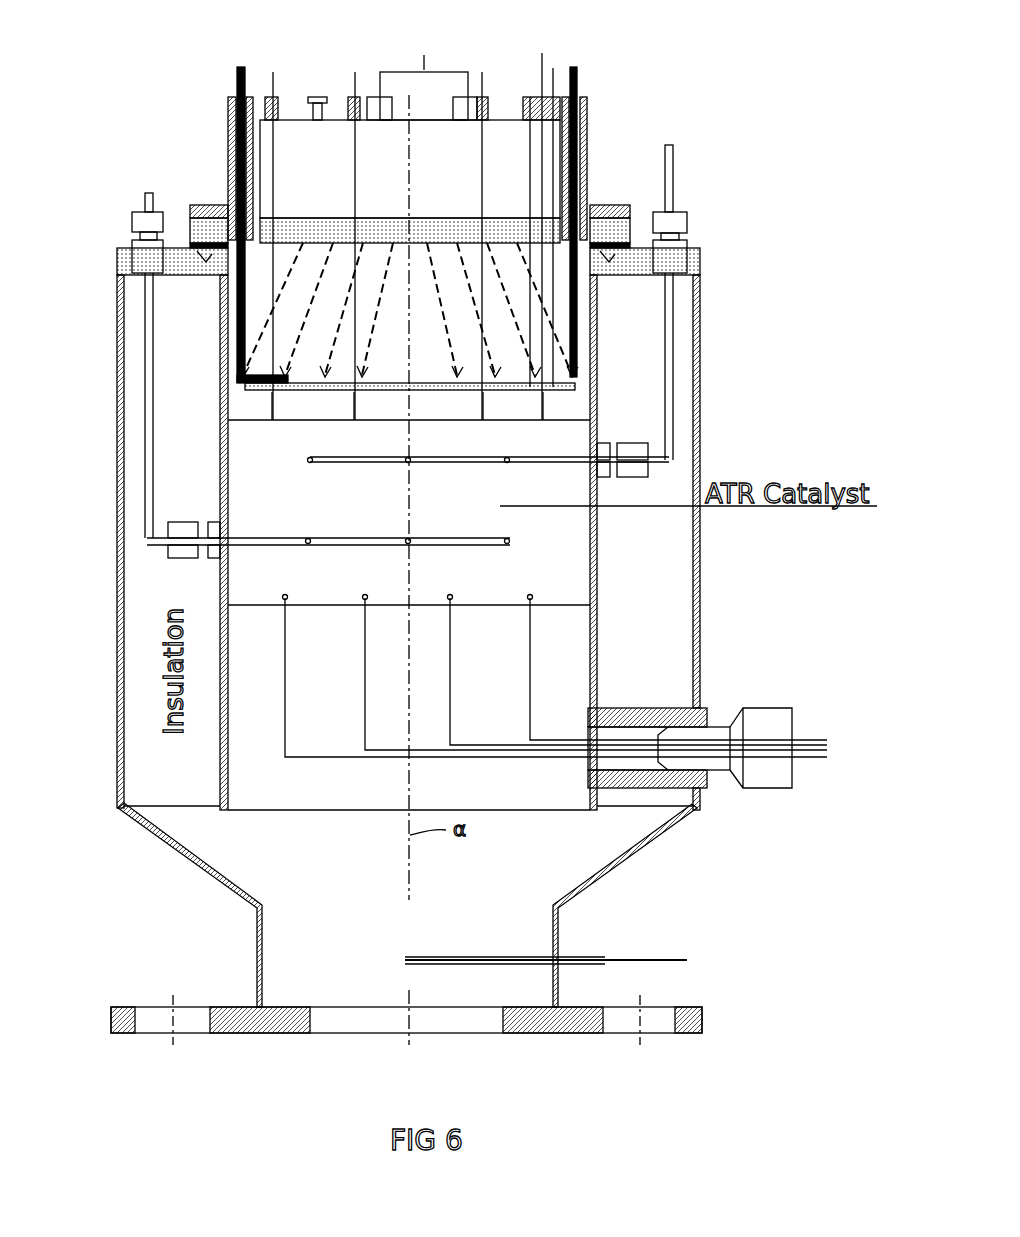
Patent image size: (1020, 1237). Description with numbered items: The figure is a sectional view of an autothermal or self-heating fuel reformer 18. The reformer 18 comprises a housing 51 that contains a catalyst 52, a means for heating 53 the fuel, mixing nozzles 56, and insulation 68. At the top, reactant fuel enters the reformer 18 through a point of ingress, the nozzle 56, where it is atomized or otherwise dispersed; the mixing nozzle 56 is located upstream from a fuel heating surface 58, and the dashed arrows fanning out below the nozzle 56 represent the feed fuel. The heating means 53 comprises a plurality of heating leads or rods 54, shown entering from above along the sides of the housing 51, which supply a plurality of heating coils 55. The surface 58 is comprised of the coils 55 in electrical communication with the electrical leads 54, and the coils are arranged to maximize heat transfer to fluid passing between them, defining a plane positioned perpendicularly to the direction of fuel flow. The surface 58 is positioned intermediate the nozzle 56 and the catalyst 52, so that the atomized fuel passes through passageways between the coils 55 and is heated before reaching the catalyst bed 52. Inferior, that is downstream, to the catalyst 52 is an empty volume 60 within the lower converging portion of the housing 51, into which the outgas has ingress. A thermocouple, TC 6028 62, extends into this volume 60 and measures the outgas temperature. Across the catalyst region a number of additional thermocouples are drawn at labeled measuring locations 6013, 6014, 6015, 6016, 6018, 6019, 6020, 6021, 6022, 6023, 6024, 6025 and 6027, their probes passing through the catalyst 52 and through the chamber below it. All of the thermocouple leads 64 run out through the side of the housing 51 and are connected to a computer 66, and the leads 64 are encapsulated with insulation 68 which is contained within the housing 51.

The reformer 18 is at (657, 1047).
The housing 51 is at (228, 182).
The catalyst 52 is at (482, 605).
The means for heating fuel 53 is at (238, 88).
The heating leads or rods 54 is at (231, 145).
The heating coils 55 is at (445, 396).
The mixing nozzle 56 is at (428, 177).
The fuel heating surface 58 is at (441, 384).
The empty volume 60 is at (410, 886).
The thermocouple TC 6028 62 is at (655, 956).
The thermocouple leads 64 is at (273, 78).
The computer 66 is at (800, 740).
The insulation 68 is at (277, 97).
The thermocouple location 6013 is at (554, 422).
The thermocouple location 6014 is at (480, 422).
The thermocouple location 6015 is at (351, 422).
The thermocouple location 6016 is at (260, 422).
The thermocouple location 6018 is at (536, 476).
The thermocouple location 6019 is at (406, 476).
The thermocouple location 6020 is at (277, 471).
The thermocouple location 6021 is at (513, 528).
The thermocouple location 6022 is at (410, 528).
The thermocouple location 6023 is at (310, 528).
The thermocouple location 6024 is at (530, 583).
The thermocouple location 6025 is at (408, 583).
The thermocouple location 6027 is at (285, 583).
The thermocouple TC 6028 is at (490, 946).